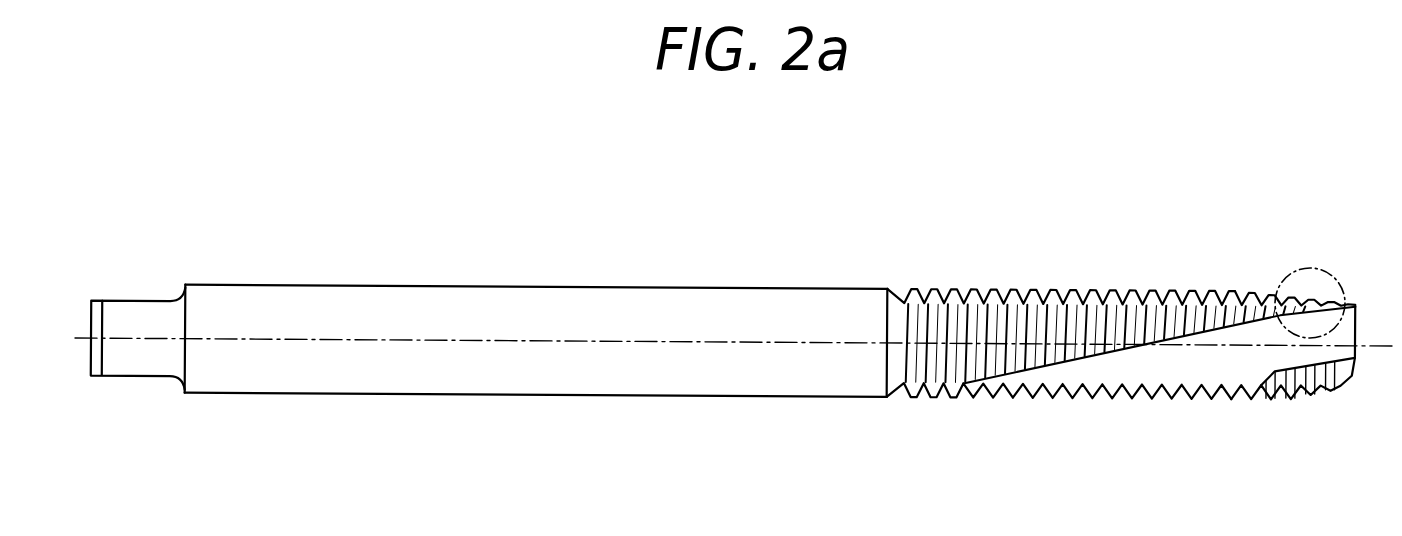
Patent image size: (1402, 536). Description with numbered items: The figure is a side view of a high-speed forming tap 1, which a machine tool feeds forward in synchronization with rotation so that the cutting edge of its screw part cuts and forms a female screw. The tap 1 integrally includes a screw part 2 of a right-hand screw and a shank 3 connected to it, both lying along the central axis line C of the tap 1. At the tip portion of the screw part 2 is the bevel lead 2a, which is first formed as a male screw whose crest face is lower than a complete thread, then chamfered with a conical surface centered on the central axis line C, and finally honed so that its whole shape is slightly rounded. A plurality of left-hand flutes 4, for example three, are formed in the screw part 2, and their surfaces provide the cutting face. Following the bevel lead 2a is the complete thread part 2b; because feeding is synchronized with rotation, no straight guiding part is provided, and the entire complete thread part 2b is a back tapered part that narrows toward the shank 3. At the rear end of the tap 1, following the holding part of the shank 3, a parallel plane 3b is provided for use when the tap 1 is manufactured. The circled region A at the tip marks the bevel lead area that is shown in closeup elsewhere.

The high-speed forming tap 1 is at (636, 258).
The screw part 2 is at (1360, 246).
The bevel lead 2a is at (1232, 416).
The complete thread part 2b is at (1223, 413).
The shank 3 is at (489, 335).
The parallel plane 3b is at (138, 298).
The left-hand flute 4 is at (1343, 333).
The enlarged detail region A is at (1279, 278).
The central axis line C is at (1383, 350).